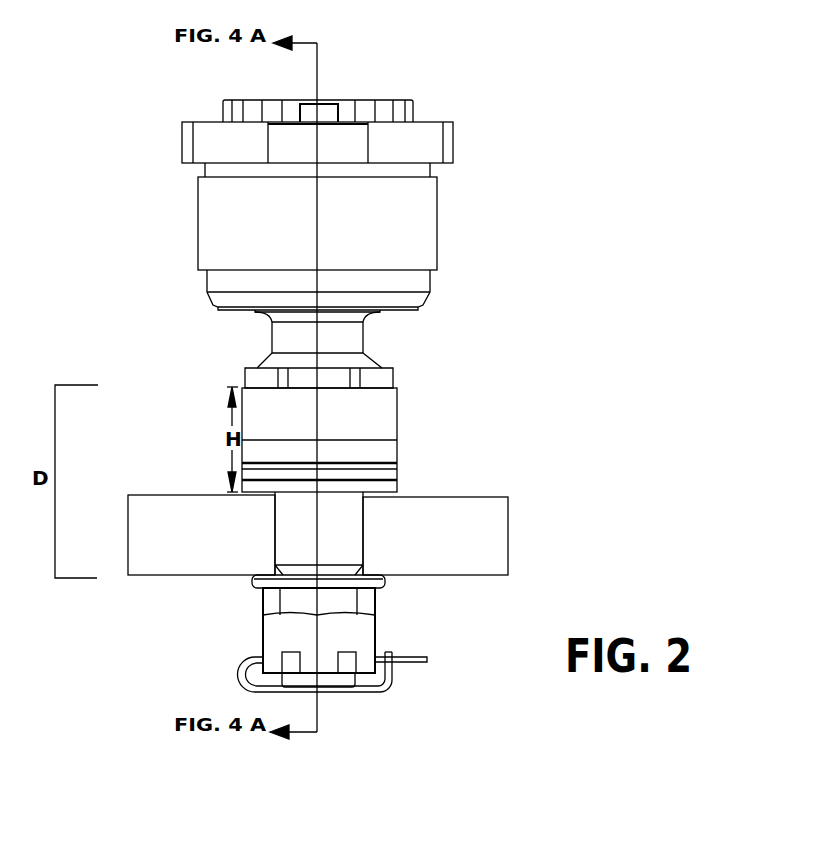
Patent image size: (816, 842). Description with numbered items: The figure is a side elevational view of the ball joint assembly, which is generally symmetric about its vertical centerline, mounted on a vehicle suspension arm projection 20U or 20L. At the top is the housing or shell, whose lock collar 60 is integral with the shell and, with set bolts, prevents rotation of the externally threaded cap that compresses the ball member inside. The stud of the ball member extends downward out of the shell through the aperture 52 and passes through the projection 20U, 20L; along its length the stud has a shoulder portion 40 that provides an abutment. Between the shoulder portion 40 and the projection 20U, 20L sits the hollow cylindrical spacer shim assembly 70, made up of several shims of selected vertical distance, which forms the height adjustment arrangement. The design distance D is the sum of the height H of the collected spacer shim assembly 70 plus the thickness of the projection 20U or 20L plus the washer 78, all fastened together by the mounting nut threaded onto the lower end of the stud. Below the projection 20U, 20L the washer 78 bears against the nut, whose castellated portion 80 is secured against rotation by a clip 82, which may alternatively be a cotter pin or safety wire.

The lock collar 60 is at (428, 143).
The shoulder portion 40 is at (393, 368).
The spacer shim assembly 70 is at (395, 440).
The suspension arm projection 20U is at (396, 520).
The suspension arm projection 20L is at (493, 537).
The aperture 52 is at (275, 536).
The washer 78 is at (293, 584).
The castellated portion 80 is at (357, 658).
The clip 82 is at (391, 697).